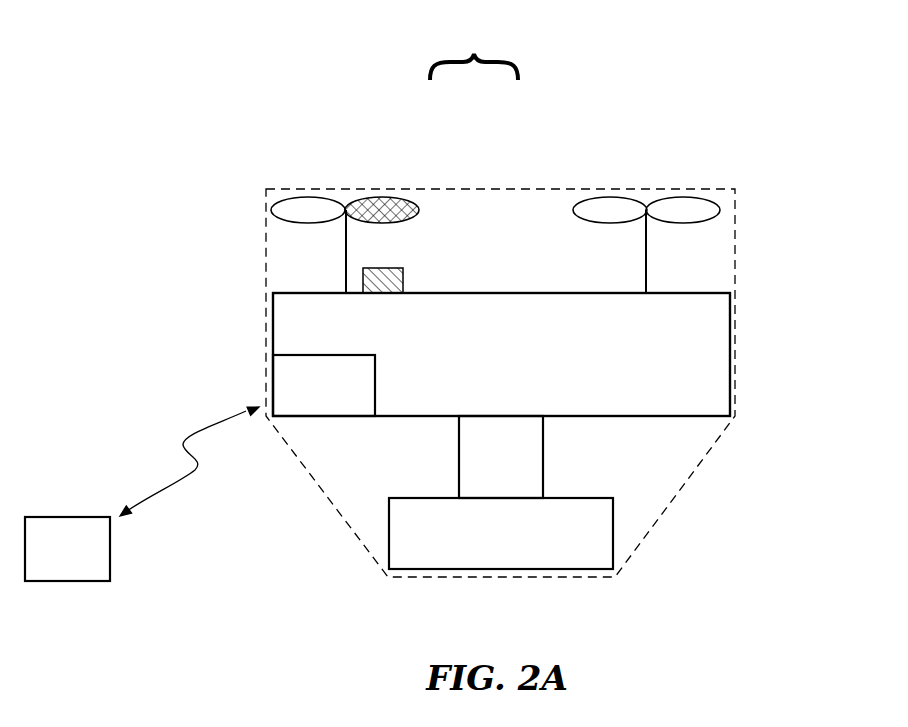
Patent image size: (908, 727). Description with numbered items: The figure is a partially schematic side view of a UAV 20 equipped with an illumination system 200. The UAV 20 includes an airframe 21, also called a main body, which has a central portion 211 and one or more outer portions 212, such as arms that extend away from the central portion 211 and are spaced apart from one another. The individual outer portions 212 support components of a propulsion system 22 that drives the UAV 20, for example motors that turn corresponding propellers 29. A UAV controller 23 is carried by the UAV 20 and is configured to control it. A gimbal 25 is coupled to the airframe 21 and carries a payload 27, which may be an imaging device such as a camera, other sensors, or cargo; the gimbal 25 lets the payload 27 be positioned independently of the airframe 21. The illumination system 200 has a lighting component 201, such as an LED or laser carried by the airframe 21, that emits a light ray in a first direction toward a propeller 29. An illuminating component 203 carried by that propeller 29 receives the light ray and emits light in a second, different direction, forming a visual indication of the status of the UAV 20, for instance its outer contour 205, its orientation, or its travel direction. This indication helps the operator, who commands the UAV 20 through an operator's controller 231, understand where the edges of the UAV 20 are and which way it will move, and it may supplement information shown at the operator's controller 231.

The UAV 20 is at (861, 110).
The airframe 21 is at (713, 334).
The propulsion system 22 is at (258, 205).
The UAV controller 23 is at (324, 385).
The gimbal 25 is at (501, 457).
The payload 27 is at (501, 533).
The propellers 29 is at (298, 191).
The illumination system 200 is at (454, 50).
The lighting component 201 is at (393, 284).
The illuminating component 203 is at (376, 195).
The outer contour 205 is at (690, 494).
The central portion 211 is at (505, 362).
The outer portions 212 is at (308, 334).
The operator's controller 231 is at (142, 494).